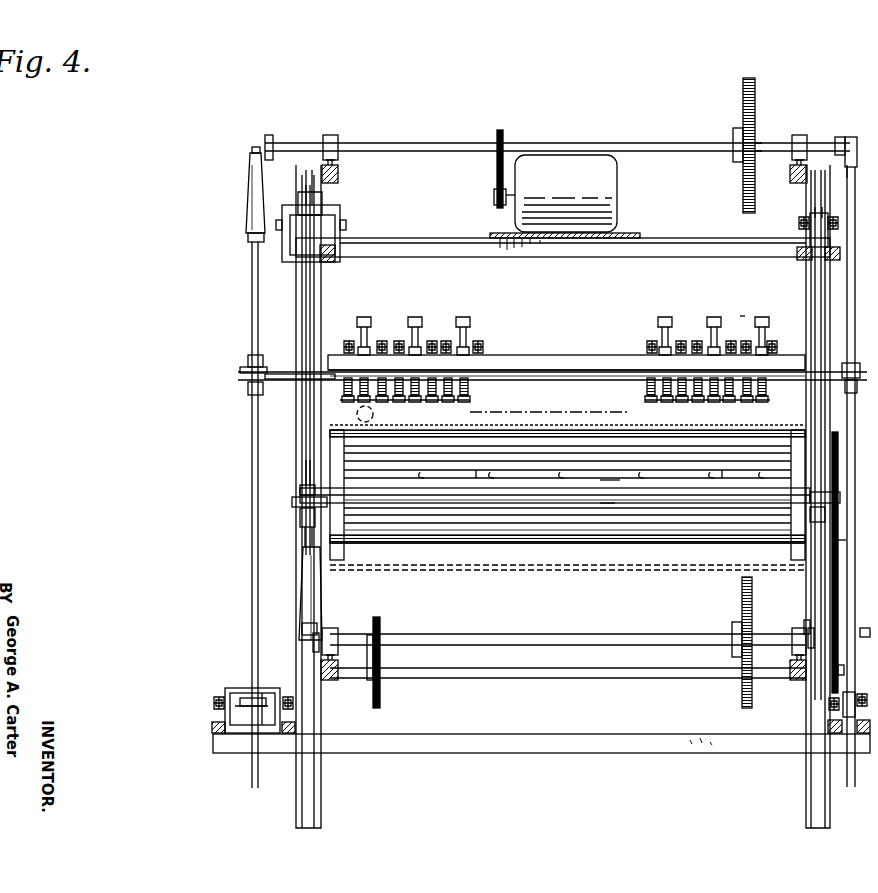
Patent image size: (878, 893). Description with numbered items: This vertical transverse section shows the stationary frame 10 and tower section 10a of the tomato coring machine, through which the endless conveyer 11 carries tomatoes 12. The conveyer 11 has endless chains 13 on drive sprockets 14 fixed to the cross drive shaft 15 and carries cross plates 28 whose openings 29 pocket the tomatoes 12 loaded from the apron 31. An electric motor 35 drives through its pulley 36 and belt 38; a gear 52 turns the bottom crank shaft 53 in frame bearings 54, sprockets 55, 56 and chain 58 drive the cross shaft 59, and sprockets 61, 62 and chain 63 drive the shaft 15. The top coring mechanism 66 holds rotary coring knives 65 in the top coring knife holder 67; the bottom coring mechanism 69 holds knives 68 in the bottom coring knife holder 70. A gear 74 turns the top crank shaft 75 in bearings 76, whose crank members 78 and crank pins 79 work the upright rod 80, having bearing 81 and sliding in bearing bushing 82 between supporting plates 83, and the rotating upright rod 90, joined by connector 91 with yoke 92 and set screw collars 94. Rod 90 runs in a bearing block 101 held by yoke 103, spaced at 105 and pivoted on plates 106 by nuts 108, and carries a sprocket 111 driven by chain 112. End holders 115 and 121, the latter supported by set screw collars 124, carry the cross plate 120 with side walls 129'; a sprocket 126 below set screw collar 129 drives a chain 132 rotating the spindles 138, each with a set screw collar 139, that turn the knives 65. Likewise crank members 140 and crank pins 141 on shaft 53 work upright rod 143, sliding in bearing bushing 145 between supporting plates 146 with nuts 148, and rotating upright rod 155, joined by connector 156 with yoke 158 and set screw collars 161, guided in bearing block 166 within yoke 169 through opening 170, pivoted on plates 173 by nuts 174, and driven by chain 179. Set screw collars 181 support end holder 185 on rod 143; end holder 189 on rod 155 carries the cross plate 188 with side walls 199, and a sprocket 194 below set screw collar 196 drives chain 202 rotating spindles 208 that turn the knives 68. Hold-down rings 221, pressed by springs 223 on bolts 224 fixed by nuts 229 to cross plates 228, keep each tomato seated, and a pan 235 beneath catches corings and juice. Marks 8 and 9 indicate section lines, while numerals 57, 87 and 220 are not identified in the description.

The stationary frame 10 is at (696, 233).
The tower section 10a is at (393, 243).
The endless conveyer 11 is at (552, 545).
The tomatoes 12 is at (375, 413).
The endless chains 13 is at (340, 540).
The drive sprockets 14 is at (345, 515).
The cross drive shaft 15 is at (553, 480).
The cross plates 28 is at (594, 425).
The openings 29 is at (705, 440).
The apron 31 is at (542, 412).
The electric motor 35 is at (618, 176).
The pulley 36 is at (497, 197).
The belt 38 is at (497, 170).
The gear 52 is at (742, 592).
The bottom horizontal crank shaft 53 is at (575, 636).
The frame bearings 54 is at (333, 630).
The sprocket 55 is at (376, 620).
The sprocket 56 is at (370, 685).
The bearing 57 is at (797, 640).
The chain 58 is at (381, 658).
The horizontal cross shaft 59 is at (566, 678).
The sprocket 61 is at (845, 672).
The sprocket 62 is at (838, 470).
The chain 63 is at (838, 542).
The rotary coring knives 65 is at (422, 397).
The top coring mechanism 66 is at (742, 314).
The top coring knife holder 67 is at (594, 354).
The coring knives 68 is at (455, 478).
The bottom coring mechanism 69 is at (610, 478).
The bottom coring knife holder 70 is at (602, 505).
The gear 74 is at (743, 83).
The top horizontal crank shaft 75 is at (650, 143).
The bearings 76 is at (336, 135).
The rotary crank members 78 is at (268, 135).
The horizontal crank pin 79 is at (250, 158).
The upright rod 80 is at (855, 297).
The bearing 81 is at (856, 178).
The bearing bushing 82 is at (855, 695).
The supporting plates 83 is at (832, 713).
The nut 87 is at (832, 700).
The upright rod 90 is at (252, 297).
The connector 91 is at (248, 178).
The yoke 92 is at (250, 198).
The set screw collars 94 is at (248, 237).
The bearing block 101 is at (240, 735).
The inverted U-shaped yoke 103 is at (240, 695).
The space 105 is at (245, 703).
The spaced parallel plates 106 is at (222, 715).
The coaxial nuts 108 is at (215, 706).
The sprocket 111 is at (245, 698).
The chain 112 is at (266, 700).
The end supporting plate 115 is at (848, 396).
The cross plate 120 is at (614, 375).
The end holder 121 is at (246, 378).
The set screw collars 124 is at (247, 388).
The sprocket 126 is at (242, 356).
The set screw collar 129 is at (552, 354).
The side walls 129' is at (566, 347).
The chain 132 is at (290, 380).
The vertical spindle 138 is at (366, 317).
The set screw collar 139 is at (463, 317).
The rotary crank members 140 is at (805, 630).
The horizontal crank pin 141 is at (850, 618).
The upright rod 143 is at (815, 284).
The bearing bushing 145 is at (818, 222).
The supporting plates 146 is at (805, 250).
The coaxial nuts 148 is at (803, 232).
The upright rod 155 is at (300, 320).
The connector 156 is at (303, 562).
The yoke 158 is at (304, 595).
The set screw collars 161 is at (305, 556).
The bearing block 166 is at (320, 265).
The inverted U-shaped yoke 169 is at (325, 215).
The opening 170 is at (306, 190).
The spaced parallel plates 173 is at (340, 250).
The coaxial nuts 174 is at (279, 220).
The chain 179 is at (325, 210).
The set screw collars 181 is at (848, 515).
The end supporting plate 185 is at (796, 500).
The cross plate 188 is at (658, 500).
The end holder 189 is at (302, 512).
The sprocket 194 is at (302, 490).
The set screw collar 196 is at (300, 472).
The side walls 199 is at (522, 495).
The chain 202 is at (300, 500).
The vertical spindle 208 is at (479, 478).
The nuts 220 is at (388, 343).
The flat ring 221 is at (463, 397).
The helical compression springs 223 is at (493, 386).
The bolt 224 is at (490, 348).
The cross plate 228 is at (432, 345).
The nuts 229 is at (652, 345).
The pan 235 is at (622, 568).
The section line 8 is at (235, 363).
The section line 9 is at (280, 492).